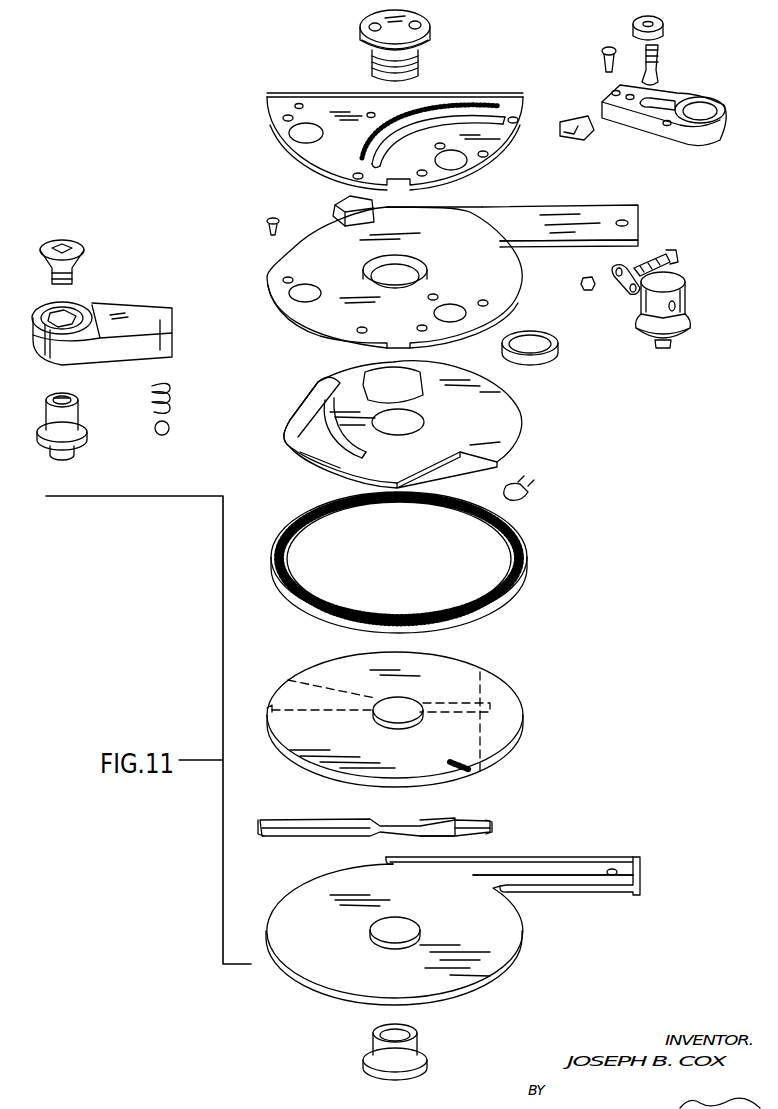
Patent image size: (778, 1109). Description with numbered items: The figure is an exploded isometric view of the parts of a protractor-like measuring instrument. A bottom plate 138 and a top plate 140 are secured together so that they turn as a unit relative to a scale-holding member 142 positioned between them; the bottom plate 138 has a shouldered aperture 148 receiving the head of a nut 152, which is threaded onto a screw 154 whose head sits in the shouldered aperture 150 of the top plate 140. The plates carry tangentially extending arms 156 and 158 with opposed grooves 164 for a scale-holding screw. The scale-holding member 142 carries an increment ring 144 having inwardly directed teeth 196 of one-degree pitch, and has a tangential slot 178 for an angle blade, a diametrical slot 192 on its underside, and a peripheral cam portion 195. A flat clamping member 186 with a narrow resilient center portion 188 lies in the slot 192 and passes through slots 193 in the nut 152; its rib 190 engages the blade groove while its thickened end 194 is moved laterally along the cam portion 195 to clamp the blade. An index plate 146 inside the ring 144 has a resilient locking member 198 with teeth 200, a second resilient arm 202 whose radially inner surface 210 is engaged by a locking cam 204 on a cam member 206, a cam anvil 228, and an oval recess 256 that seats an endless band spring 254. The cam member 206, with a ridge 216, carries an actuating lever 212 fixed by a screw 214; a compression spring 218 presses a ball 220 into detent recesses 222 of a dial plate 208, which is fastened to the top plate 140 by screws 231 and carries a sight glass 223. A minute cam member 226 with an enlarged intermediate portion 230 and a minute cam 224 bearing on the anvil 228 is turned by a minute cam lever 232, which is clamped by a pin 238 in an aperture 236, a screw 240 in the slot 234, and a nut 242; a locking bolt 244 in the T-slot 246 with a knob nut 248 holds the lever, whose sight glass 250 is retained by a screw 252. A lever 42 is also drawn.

The screw 154 is at (412, 21).
The detent recesses 222 is at (368, 112).
The dial plate 208 is at (285, 143).
The T-slot 246 is at (380, 162).
The nut 248 is at (663, 26).
The locking bolt 244 is at (658, 58).
The screw 252 is at (604, 64).
The slot 234 is at (658, 104).
The minute cam lever 232 is at (708, 104).
The sight glass 250 is at (572, 136).
The arm 158 is at (603, 218).
The sight glass 223 is at (334, 205).
The top plate 140 is at (328, 227).
The screws 231 is at (266, 224).
The shouldered aperture 150 is at (375, 268).
The screw 240 is at (656, 257).
The nut 242 is at (581, 285).
The pin 238 is at (626, 290).
The aperture 236 is at (675, 306).
The minute cam member 226 is at (641, 318).
The intermediate portion 230 is at (688, 326).
The minute cam 224 is at (663, 348).
The spring 254 is at (548, 359).
The screw 214 is at (78, 255).
The actuating lever 212 is at (80, 305).
The lever 42 is at (135, 306).
The ridge 216 is at (75, 398).
The cam member 206 is at (70, 420).
The locking cam 204 is at (72, 452).
The compression spring 218 is at (170, 394).
The ball 220 is at (169, 430).
The locking member 198 is at (313, 396).
The teeth 200 is at (290, 444).
The resilient arm 202 is at (305, 452).
The radially inner surface 210 is at (356, 456).
The oval recess 256 is at (410, 392).
The index plate 146 is at (508, 432).
The cam anvil 228 is at (530, 494).
The teeth 196 is at (302, 532).
The increment ring 144 is at (527, 570).
The cam portion 195 is at (290, 680).
The slot 192 is at (452, 703).
The slot 178 is at (513, 757).
The scale-holding member 142 is at (462, 766).
The end 194 is at (280, 800).
The center portion 188 is at (420, 800).
The rib 190 is at (495, 828).
The clamping member 186 is at (340, 832).
The grooves 164 is at (640, 874).
The arm 156 is at (588, 866).
The bottom plate 138 is at (292, 905).
The shouldered aperture 148 is at (372, 930).
The slots 193 is at (418, 1050).
The nut 152 is at (375, 1058).